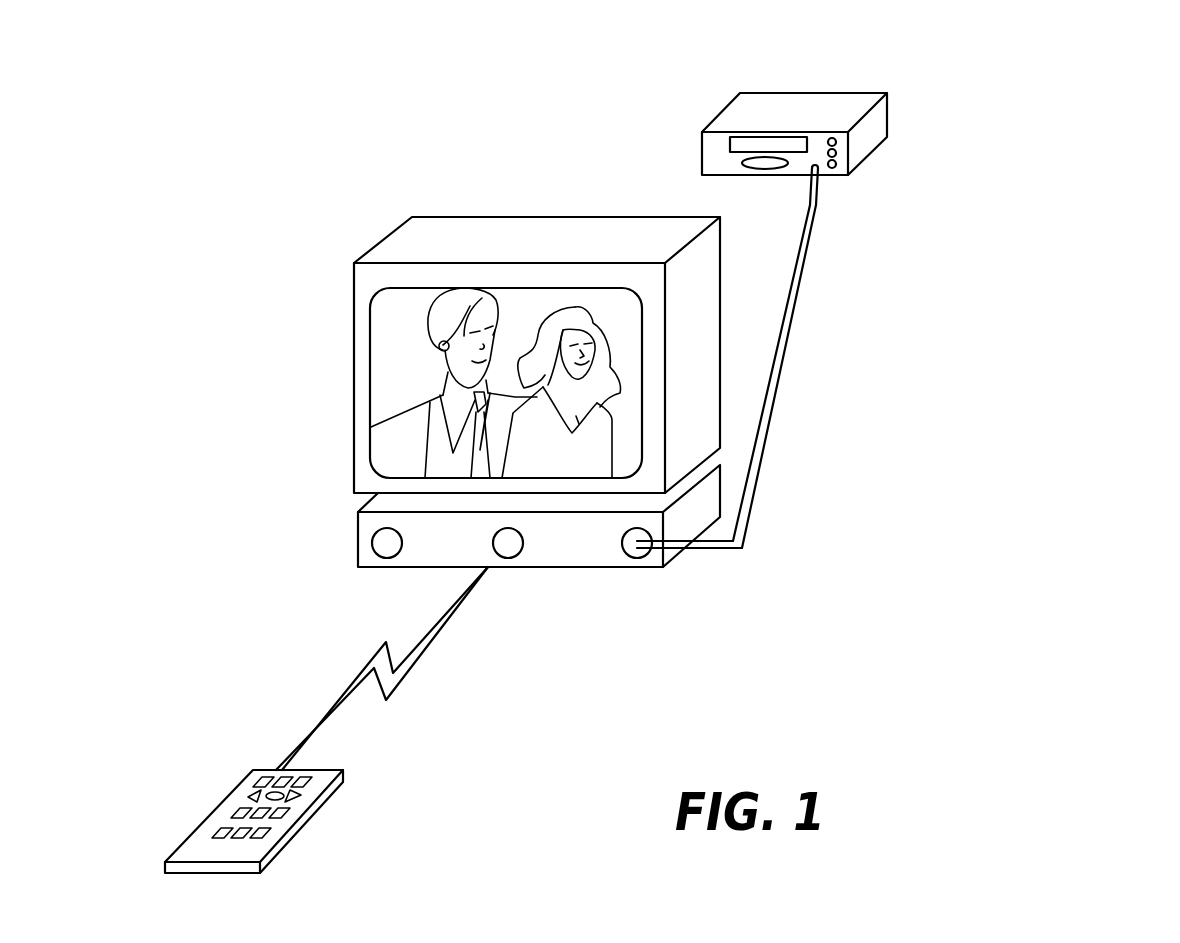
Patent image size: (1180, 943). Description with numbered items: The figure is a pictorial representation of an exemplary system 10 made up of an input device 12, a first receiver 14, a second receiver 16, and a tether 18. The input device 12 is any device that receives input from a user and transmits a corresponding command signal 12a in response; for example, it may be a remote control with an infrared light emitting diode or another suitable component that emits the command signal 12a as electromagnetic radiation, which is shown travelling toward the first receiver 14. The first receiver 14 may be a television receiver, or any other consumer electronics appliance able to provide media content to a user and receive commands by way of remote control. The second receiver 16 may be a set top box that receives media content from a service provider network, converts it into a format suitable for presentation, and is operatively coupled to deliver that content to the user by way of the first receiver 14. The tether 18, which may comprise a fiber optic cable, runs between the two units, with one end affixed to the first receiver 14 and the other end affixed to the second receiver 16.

The system 10 is at (1153, 57).
The input device 12 is at (242, 720).
The command signal 12a is at (412, 670).
The first receiver 14 is at (318, 388).
The second receiver 16 is at (838, 73).
The tether 18 is at (802, 345).